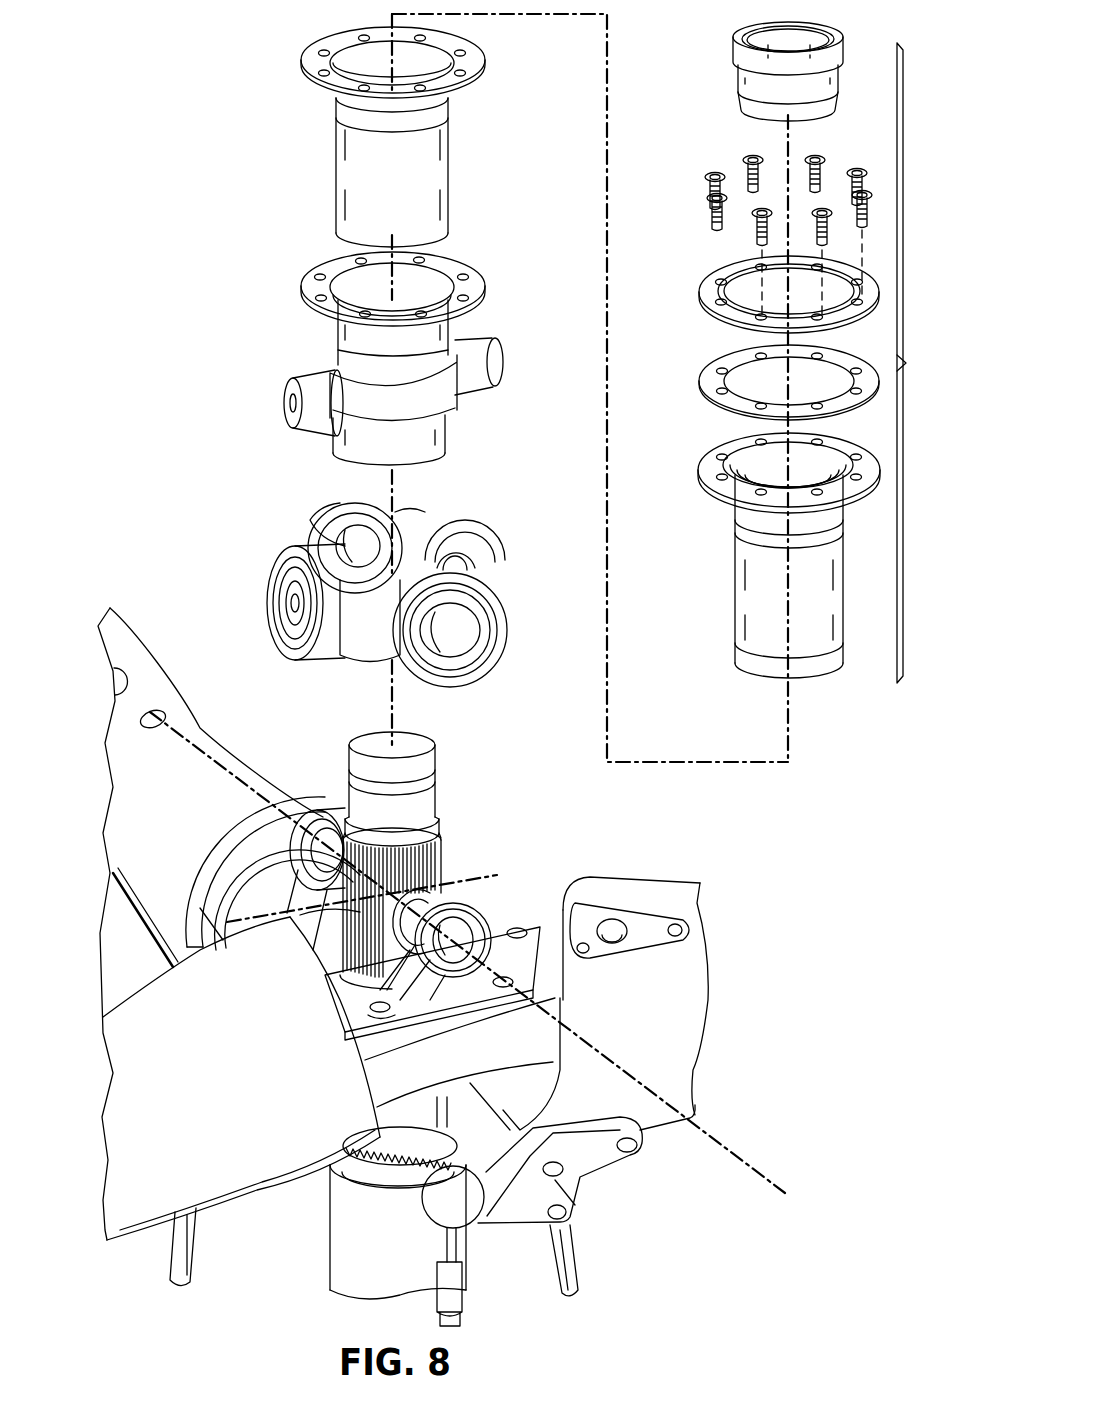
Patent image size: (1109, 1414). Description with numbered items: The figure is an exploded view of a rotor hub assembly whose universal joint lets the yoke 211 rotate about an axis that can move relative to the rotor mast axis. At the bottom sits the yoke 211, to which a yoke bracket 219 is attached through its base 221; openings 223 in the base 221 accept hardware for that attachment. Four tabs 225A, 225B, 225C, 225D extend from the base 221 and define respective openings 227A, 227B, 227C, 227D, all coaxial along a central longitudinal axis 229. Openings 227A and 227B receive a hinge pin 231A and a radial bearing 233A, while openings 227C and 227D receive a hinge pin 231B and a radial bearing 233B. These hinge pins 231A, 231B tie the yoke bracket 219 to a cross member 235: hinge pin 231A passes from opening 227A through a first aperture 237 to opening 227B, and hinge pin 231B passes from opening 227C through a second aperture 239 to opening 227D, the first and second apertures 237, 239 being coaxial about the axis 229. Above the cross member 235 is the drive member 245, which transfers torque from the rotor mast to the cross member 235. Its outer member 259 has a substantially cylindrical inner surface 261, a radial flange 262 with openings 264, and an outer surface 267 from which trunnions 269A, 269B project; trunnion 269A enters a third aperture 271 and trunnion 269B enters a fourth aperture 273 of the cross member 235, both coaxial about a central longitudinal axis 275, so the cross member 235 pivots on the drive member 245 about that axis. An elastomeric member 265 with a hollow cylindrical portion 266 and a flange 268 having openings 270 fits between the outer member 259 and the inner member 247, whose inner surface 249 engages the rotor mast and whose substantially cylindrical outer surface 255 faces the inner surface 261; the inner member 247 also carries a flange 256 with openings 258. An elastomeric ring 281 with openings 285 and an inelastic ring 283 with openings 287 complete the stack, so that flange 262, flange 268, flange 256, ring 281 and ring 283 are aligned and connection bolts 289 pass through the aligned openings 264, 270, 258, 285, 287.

The yoke 211 is at (386, 1068).
The yoke bracket 219 is at (562, 932).
The base 221 is at (482, 949).
The openings 223 is at (517, 928).
The tab 225A is at (462, 1064).
The tab 225B is at (323, 960).
The tab 225C is at (157, 930).
The tab 225D is at (250, 835).
The opening 227A is at (462, 954).
The opening 227B is at (345, 950).
The opening 227C is at (180, 950).
The opening 227D is at (325, 825).
The central longitudinal axis 229 is at (778, 1185).
The hinge pin 231A is at (480, 654).
The hinge pin 231B is at (262, 592).
The radial bearing 233A is at (509, 578).
The radial bearing 233B is at (375, 516).
The cross member 235 is at (387, 588).
The first aperture 237 is at (445, 652).
The second aperture 239 is at (368, 547).
The drive member 245 is at (791, 352).
The inner member 247 is at (753, 549).
The inner surface 249 is at (777, 483).
The substantially cylindrical outer surface 255 is at (735, 605).
The flange 256 is at (753, 483).
The openings 258 is at (716, 478).
The outer member 259 is at (393, 354).
The substantially cylindrical inner surface 261 is at (350, 302).
The flange 262 is at (390, 284).
The openings 264 is at (466, 277).
The elastomeric member 265 is at (349, 172).
The hollow cylindrical portion 266 is at (336, 195).
The outer surface 267 is at (335, 352).
The flange 268 is at (359, 49).
The trunnion 269A is at (500, 372).
The trunnion 269B is at (290, 404).
The openings 270 is at (330, 52).
The third aperture 271 is at (505, 532).
The fourth aperture 273 is at (290, 605).
The central longitudinal axis 275 is at (490, 872).
The elastomeric ring 281 is at (754, 382).
The inelastic ring 283 is at (754, 294).
The openings 285 is at (714, 371).
The openings 287 is at (714, 281).
The connection bolts 289 is at (713, 172).